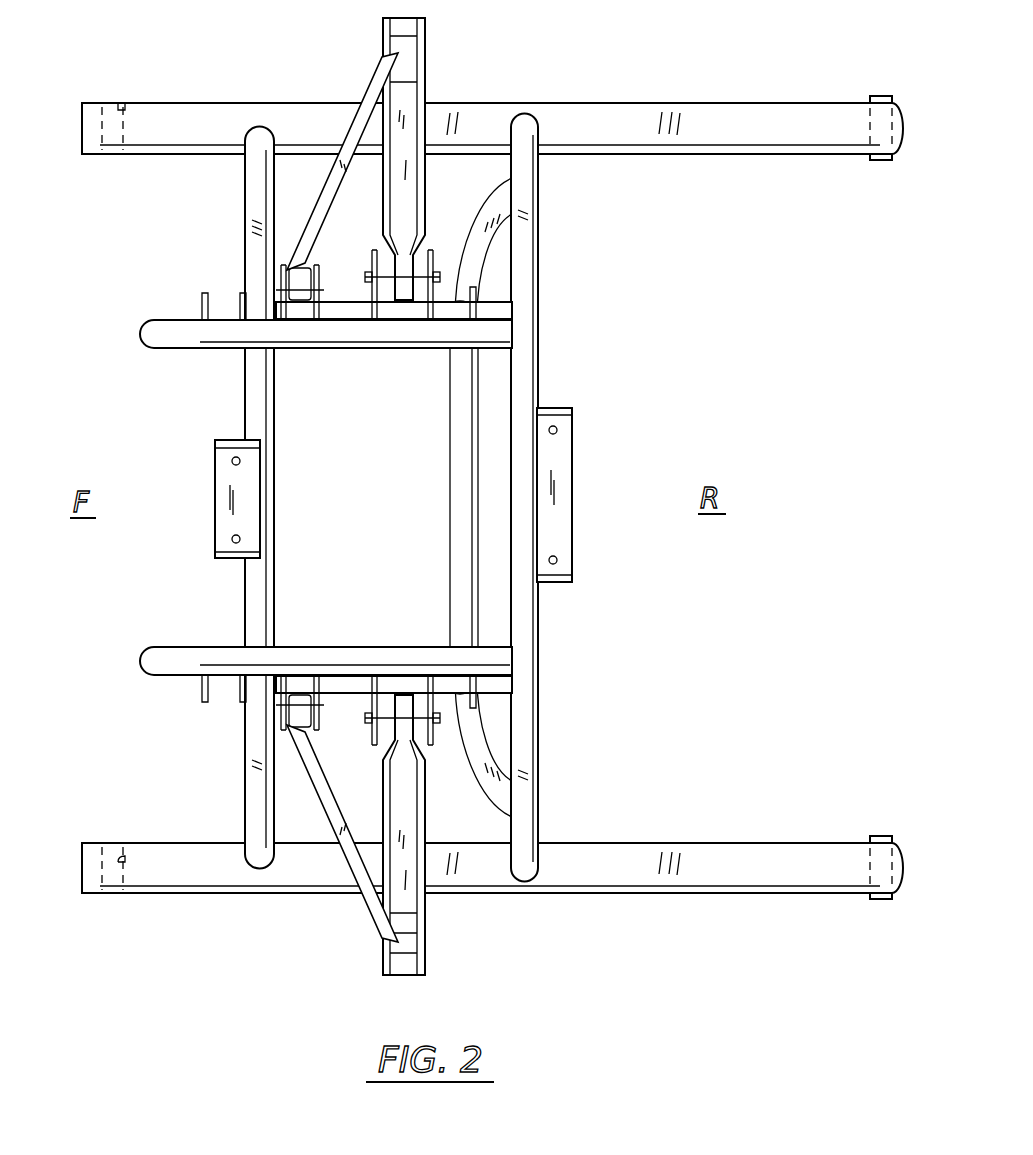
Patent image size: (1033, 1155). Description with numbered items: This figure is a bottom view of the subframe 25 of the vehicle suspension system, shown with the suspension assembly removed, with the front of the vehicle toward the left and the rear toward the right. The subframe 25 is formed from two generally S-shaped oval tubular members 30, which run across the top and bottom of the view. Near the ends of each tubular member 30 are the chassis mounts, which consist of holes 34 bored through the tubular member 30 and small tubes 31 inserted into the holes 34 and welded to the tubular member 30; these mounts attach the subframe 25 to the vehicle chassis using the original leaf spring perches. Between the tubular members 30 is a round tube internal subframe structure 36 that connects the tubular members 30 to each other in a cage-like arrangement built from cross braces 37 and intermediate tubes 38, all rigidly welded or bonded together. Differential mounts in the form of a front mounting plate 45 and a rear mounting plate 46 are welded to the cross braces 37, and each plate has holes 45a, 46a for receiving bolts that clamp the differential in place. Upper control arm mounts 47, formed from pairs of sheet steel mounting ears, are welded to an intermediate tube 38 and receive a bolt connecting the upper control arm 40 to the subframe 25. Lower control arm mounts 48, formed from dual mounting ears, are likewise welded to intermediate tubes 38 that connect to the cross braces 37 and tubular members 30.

The subframe 25 is at (585, 680).
The tubular member 30 is at (798, 136).
The small tube 31 is at (98, 132).
The hole 34 is at (126, 104).
The internal subframe structure 36 is at (550, 618).
The cross brace 37 is at (246, 250).
The intermediate tube 38 is at (443, 307).
The upper control arm 40 is at (440, 38).
The front mounting plate 45 is at (226, 508).
The hole 45a is at (232, 461).
The rear mounting plate 46 is at (557, 470).
The hole 46a is at (557, 558).
The upper control arm mount 47 is at (430, 306).
The lower control arm mount 48 is at (200, 300).